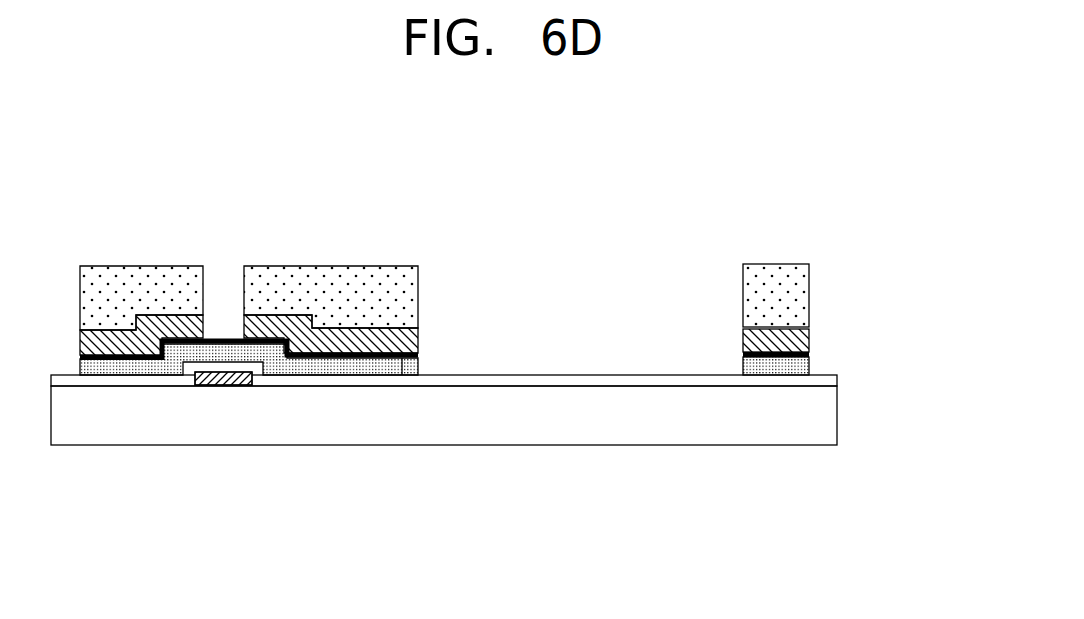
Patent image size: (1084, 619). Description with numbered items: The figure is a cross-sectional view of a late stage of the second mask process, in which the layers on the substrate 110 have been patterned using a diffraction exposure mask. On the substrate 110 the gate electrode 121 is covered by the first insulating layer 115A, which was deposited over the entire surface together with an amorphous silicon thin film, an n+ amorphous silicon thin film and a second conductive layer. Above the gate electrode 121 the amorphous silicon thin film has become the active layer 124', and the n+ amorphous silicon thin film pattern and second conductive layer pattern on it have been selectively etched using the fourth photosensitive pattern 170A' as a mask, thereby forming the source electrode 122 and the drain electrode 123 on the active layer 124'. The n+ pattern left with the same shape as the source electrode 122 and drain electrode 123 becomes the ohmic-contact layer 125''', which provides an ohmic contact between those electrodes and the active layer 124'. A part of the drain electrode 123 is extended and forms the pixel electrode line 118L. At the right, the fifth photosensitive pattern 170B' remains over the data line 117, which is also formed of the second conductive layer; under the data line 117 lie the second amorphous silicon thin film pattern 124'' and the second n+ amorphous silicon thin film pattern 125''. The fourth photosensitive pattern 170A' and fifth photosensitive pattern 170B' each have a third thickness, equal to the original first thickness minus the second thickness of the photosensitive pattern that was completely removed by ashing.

The substrate 110 is at (832, 413).
The first insulating layer 115A is at (833, 381).
The gate electrode 121 is at (222, 386).
The active layer 124' is at (249, 422).
The ohmic-contact layer 125''' is at (249, 420).
The pixel electrode line 118L is at (402, 360).
The source electrode 122 is at (178, 323).
The drain electrode 123 is at (270, 323).
The fourth photosensitive pattern 170A' is at (249, 267).
The fifth photosensitive pattern 170B' is at (819, 295).
The data line 117 is at (806, 337).
The second amorphous silicon thin film pattern 124'' is at (775, 428).
The second n+ amorphous silicon thin film pattern 125'' is at (781, 428).